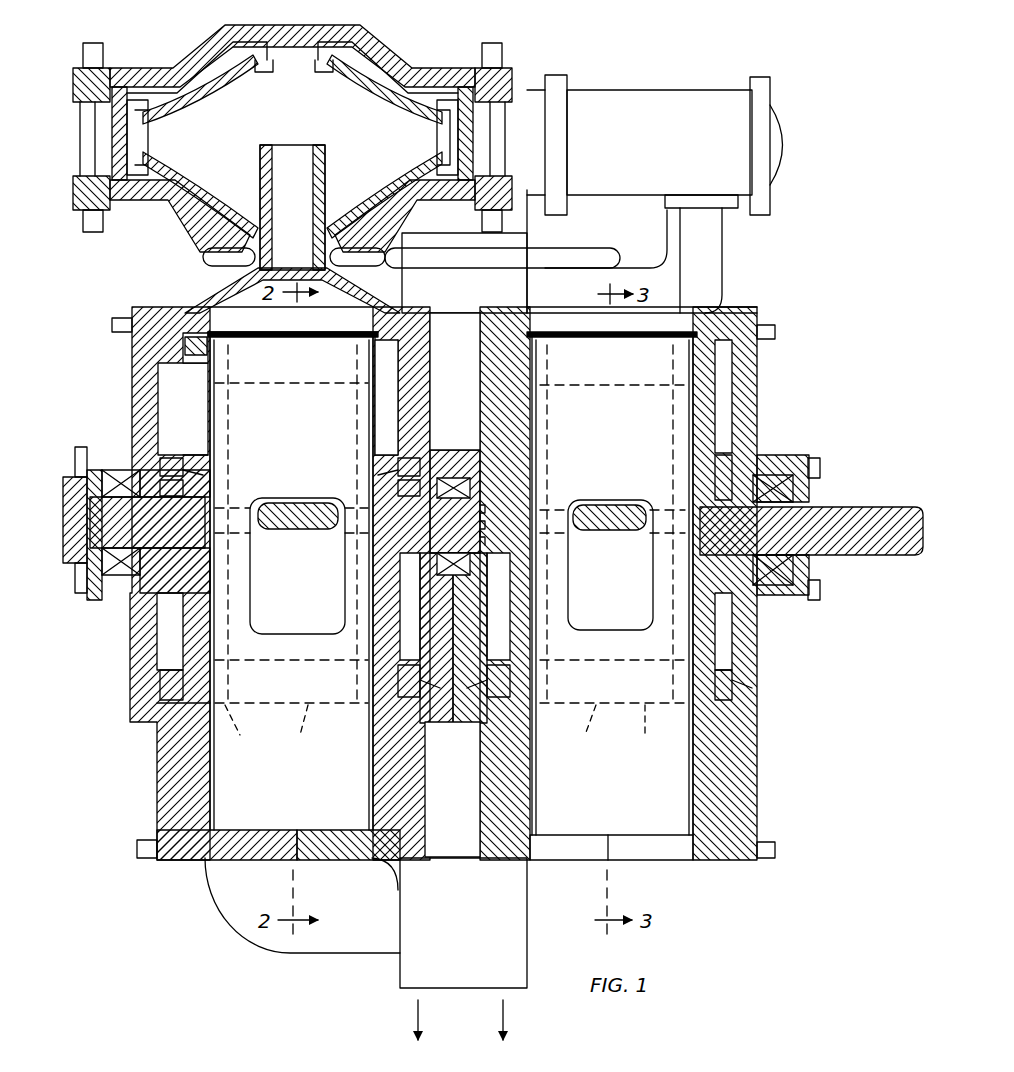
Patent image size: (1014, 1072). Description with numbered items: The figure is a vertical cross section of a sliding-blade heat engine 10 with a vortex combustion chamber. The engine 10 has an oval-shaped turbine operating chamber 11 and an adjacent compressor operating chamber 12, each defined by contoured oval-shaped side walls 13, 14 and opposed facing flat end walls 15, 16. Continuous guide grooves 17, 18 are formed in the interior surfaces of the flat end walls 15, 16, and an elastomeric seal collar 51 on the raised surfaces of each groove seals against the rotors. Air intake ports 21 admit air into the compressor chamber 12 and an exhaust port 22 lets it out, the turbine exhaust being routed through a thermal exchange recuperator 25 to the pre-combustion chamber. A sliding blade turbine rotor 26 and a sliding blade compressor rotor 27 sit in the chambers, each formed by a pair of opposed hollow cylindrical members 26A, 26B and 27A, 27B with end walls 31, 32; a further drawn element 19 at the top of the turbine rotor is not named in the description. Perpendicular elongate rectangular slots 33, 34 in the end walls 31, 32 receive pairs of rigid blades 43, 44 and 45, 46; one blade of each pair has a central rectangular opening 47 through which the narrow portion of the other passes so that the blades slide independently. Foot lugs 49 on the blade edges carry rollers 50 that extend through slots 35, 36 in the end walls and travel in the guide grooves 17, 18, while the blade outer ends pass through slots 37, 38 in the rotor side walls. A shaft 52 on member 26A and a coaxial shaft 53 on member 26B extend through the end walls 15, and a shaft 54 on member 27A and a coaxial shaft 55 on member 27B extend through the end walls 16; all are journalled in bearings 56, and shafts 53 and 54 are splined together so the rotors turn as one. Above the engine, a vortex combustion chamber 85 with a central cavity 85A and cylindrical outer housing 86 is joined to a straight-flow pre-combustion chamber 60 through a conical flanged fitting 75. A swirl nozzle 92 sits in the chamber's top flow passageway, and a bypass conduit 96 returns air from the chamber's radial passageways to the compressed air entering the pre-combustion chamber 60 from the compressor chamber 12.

The engine 10 is at (778, 268).
The turbine operating chamber 11 is at (148, 770).
The compressor operating chamber 12 is at (759, 746).
The side wall 13 is at (248, 855).
The side wall 14 is at (555, 855).
The flat end wall 15 is at (212, 778).
The flat end wall 16 is at (534, 767).
The guide groove 17 is at (135, 437).
The guide groove 18 is at (496, 480).
The first piston head plate 19 is at (243, 333).
The air intake port 21 is at (635, 857).
The exhaust port 22 is at (674, 311).
The thermal exchange recuperator 25 is at (472, 942).
The sliding blade turbine rotor 26 is at (168, 635).
The hollow cylindrical member 26A is at (257, 741).
The hollow cylindrical member 26B is at (322, 746).
The sliding blade compressor rotor 27 is at (723, 407).
The hollow cylindrical member 27A is at (574, 746).
The hollow cylindrical member 27B is at (647, 746).
The end wall 31 is at (160, 662).
The end wall 32 is at (731, 385).
The elongate rectangular slot 33 is at (222, 437).
The elongate rectangular slot 34 is at (545, 405).
The rectangular perpendicular slot 35 is at (205, 405).
The rectangular perpendicular slot 36 is at (695, 625).
The slot 37 is at (328, 348).
The slot 38 is at (603, 350).
The rigid blade 43 is at (300, 812).
The rigid blade 44 is at (620, 816).
The rigid blade 45 is at (296, 530).
The rigid blade 46 is at (616, 532).
The central rectangular opening 47 is at (255, 587).
The foot lug 49 is at (378, 475).
The roller 50 is at (165, 455).
The elastomeric seal collar 51 is at (480, 440).
The shaft 52 is at (115, 590).
The shaft 53 is at (400, 585).
The shaft 54 is at (500, 518).
The shaft 55 is at (858, 508).
The bearing 56 is at (112, 468).
The pre-combustion chamber 60 is at (645, 154).
The conical flanged fitting 75 is at (535, 128).
The vortex combustion chamber 85 is at (398, 38).
The central cavity 85A is at (318, 134).
The cylindrical outer housing 86 is at (94, 145).
The swirl nozzle 92 is at (270, 63).
The bypass conduit 96 is at (580, 250).